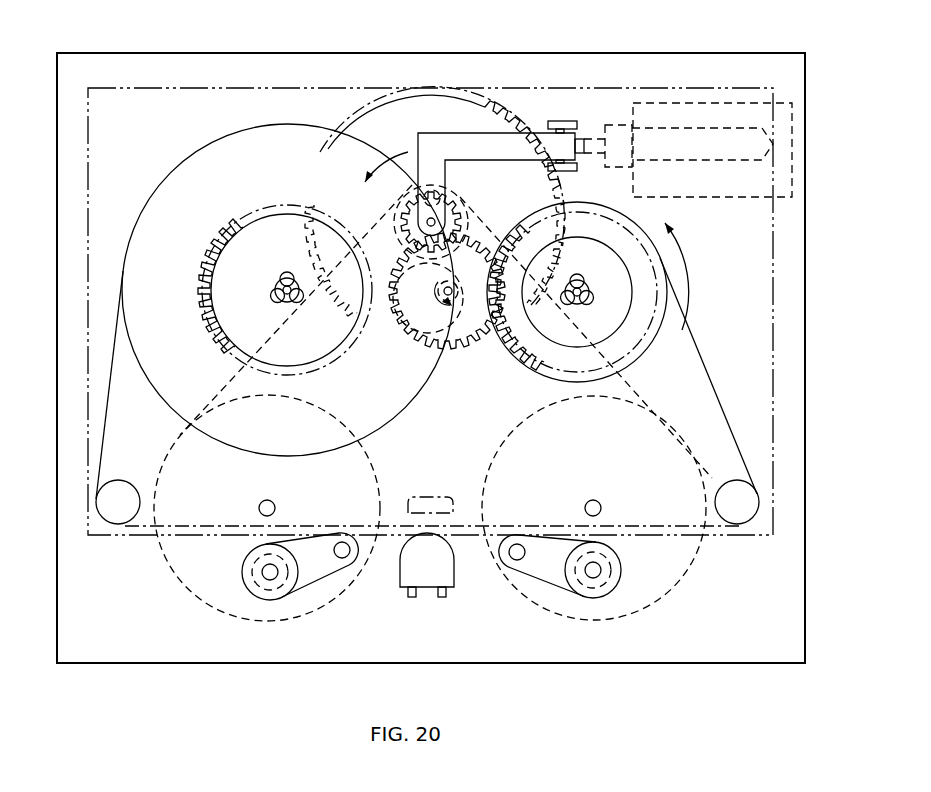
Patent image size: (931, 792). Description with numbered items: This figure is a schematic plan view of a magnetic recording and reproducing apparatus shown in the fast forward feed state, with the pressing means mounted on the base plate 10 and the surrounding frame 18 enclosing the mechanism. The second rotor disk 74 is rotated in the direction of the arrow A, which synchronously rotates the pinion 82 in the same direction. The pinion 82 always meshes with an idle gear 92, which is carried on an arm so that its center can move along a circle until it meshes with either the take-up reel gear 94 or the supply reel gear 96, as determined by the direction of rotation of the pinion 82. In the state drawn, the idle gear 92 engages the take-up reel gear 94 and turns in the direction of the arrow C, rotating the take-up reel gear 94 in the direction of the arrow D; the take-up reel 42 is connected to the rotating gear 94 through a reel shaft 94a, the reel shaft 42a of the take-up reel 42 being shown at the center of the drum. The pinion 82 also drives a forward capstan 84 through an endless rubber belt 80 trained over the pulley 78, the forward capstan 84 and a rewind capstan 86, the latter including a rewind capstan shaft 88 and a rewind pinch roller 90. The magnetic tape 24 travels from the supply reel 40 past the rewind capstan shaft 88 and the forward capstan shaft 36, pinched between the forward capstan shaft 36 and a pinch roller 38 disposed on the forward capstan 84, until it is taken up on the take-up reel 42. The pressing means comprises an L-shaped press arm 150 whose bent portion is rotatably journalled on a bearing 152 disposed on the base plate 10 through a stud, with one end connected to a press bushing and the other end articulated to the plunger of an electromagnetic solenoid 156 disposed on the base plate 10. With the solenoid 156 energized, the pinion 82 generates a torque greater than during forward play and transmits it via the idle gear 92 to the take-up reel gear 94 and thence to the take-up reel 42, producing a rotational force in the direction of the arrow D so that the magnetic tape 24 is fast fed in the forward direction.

The base plate 10 is at (808, 292).
The frame plate 18 is at (775, 372).
The magnetic tape 24 is at (693, 375).
The forward capstan shaft 36 is at (601, 505).
The pinch roller 38 is at (622, 572).
The supply reel 40 is at (150, 193).
The take-up reel 42 is at (587, 243).
The drum shaft 42a is at (567, 310).
The second rotor disk 74 is at (372, 98).
The pulley 78 is at (388, 218).
The endless rubber belt 80 is at (637, 391).
The pinion 82 is at (462, 208).
The forward capstan 84 is at (655, 603).
The rewind capstan 86 is at (232, 618).
The rewind capstan shaft 88 is at (275, 504).
The rewind pinch roller 90 is at (241, 572).
The idle gear 92 is at (421, 313).
The take-up reel gear 94 is at (507, 357).
The drum gear hub 94a is at (610, 280).
The supply reel gear 96 is at (204, 264).
The press arm 150 is at (440, 133).
The bearing 152 is at (562, 121).
The electromagnetic solenoid 156 is at (722, 103).
The arrow A is at (386, 153).
The arrow C is at (456, 292).
The arrow D is at (685, 276).